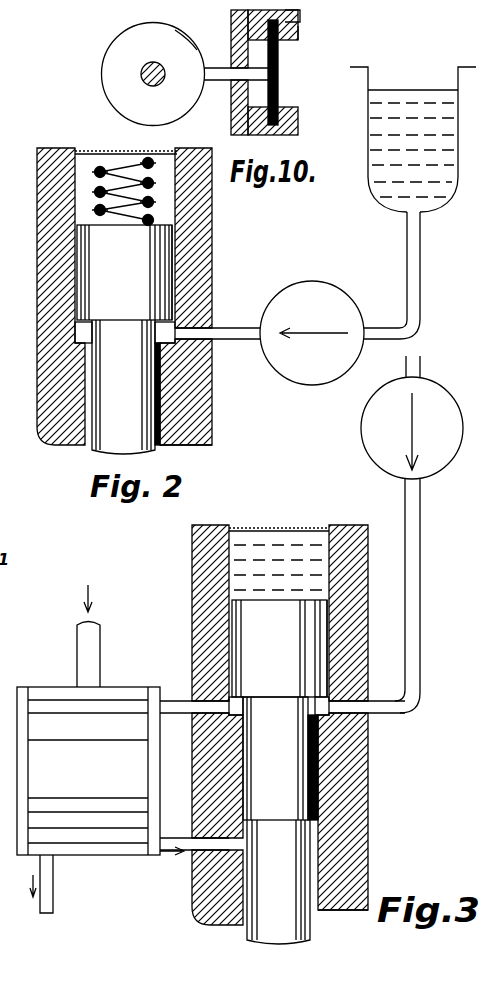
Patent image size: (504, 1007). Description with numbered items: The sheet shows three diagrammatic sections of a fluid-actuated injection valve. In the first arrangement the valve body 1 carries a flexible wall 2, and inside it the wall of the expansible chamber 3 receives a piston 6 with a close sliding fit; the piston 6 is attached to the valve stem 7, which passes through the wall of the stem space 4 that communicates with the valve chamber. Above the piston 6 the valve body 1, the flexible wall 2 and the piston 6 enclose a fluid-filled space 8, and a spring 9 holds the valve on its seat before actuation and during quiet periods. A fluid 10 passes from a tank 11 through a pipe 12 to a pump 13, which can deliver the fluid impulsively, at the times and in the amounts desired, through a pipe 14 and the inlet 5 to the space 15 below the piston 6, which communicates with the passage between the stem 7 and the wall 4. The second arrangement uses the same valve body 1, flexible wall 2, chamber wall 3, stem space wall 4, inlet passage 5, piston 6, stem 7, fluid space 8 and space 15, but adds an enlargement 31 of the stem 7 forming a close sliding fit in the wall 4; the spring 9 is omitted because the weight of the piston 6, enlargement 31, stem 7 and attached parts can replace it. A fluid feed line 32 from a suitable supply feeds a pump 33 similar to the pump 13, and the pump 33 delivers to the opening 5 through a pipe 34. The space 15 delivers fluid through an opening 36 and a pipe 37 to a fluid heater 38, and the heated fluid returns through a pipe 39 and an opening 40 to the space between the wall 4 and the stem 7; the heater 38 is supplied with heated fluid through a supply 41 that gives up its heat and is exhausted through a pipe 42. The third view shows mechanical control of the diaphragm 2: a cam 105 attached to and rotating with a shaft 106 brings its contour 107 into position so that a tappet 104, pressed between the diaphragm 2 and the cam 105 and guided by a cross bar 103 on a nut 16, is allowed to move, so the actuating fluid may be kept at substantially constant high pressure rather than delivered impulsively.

In FIG. 10, the valve body 1 is at (298, 33).
In FIG. 2, the valve body 1 is at (212, 205).
In FIG. 3, the valve body 1 is at (368, 571).
In FIG. 10, the flexible wall 2 is at (280, 59).
In FIG. 2, the flexible wall 2 is at (140, 153).
In FIG. 3, the flexible wall 2 is at (300, 529).
In FIG. 2, the wall of the expansible chamber 3 is at (175, 255).
In FIG. 3, the wall of the expansible chamber 3 is at (328, 632).
In FIG. 2, the wall of the stem space 4 is at (165, 385).
In FIG. 3, the wall of the stem space 4 is at (318, 780).
In FIG. 2, the inlet 5 is at (208, 330).
In FIG. 3, the inlet 5 is at (368, 707).
In FIG. 2, the piston 6 is at (124, 272).
In FIG. 3, the piston 6 is at (279, 648).
In FIG. 2, the valve stem 7 is at (126, 387).
In FIG. 3, the valve stem 7 is at (278, 882).
In FIG. 2, the space above the piston 8 is at (169, 150).
In FIG. 3, the space above the piston 8 is at (265, 540).
In FIG. 2, the spring 9 is at (107, 153).
In FIG. 2, the fluid 10 is at (398, 92).
In FIG. 2, the tank 11 is at (368, 178).
In FIG. 2, the pipe 12 is at (420, 272).
In FIG. 2, the pump 13 is at (340, 285).
In FIG. 2, the pipe 14 is at (235, 341).
In FIG. 2, the space below the piston 15 is at (125, 332).
In FIG. 3, the space below the piston 15 is at (279, 706).
In FIG. 10, the nut 16 is at (300, 15).
In FIG. 3, the enlargement of stem 31 is at (280, 758).
In FIG. 3, the fluid feed line 32 is at (417, 362).
In FIG. 3, the pump 33 is at (463, 428).
In FIG. 3, the pipe 34 is at (420, 618).
In FIG. 3, the opening 36 is at (177, 701).
In FIG. 3, the pipe 37 is at (178, 713).
In FIG. 3, the fluid heater 38 is at (120, 857).
In FIG. 3, the pipe 39 is at (182, 837).
In FIG. 3, the opening 40 is at (188, 858).
In FIG. 3, the heated fluid supply 41 is at (100, 633).
In FIG. 3, the exhaust pipe 42 is at (57, 890).
In FIG. 10, the cross bar 103 is at (238, 135).
In FIG. 10, the tappet 104 is at (213, 84).
In FIG. 10, the cam 105 is at (112, 57).
In FIG. 10, the shaft 106 is at (141, 79).
In FIG. 10, the contour 107 is at (180, 30).